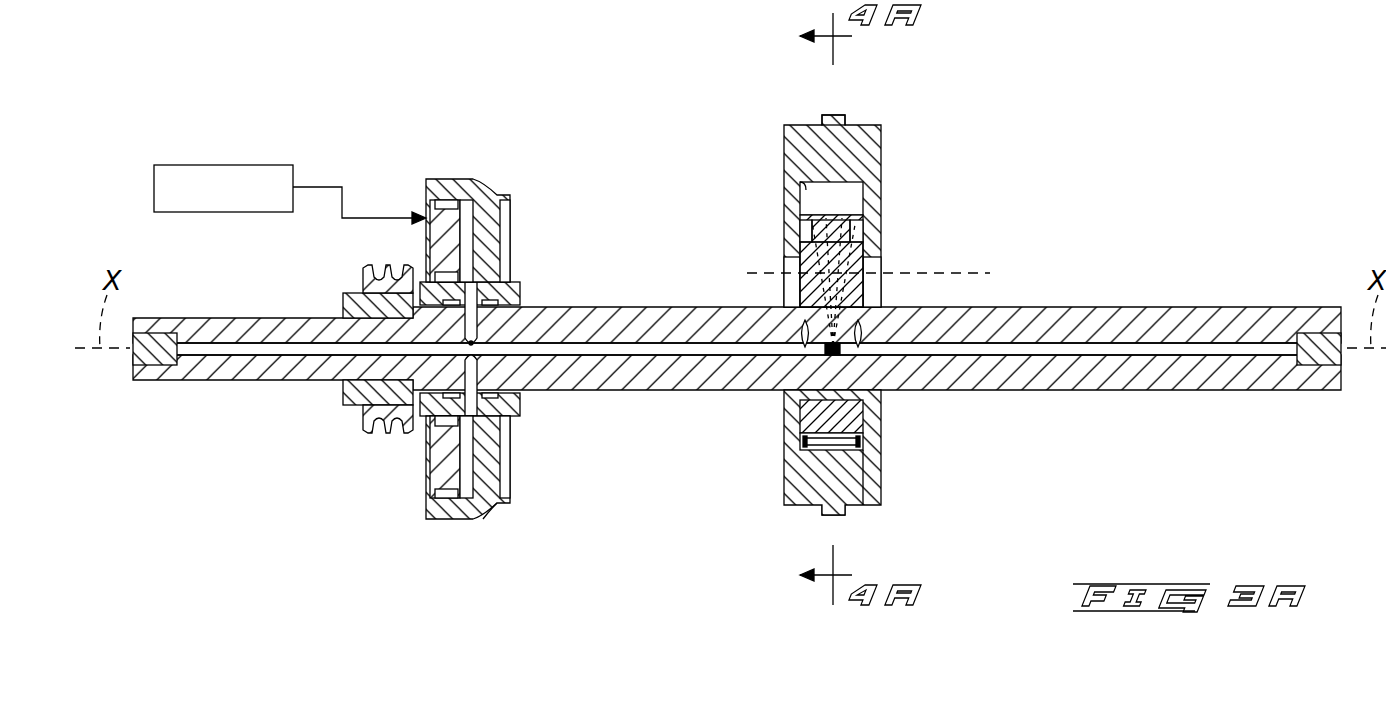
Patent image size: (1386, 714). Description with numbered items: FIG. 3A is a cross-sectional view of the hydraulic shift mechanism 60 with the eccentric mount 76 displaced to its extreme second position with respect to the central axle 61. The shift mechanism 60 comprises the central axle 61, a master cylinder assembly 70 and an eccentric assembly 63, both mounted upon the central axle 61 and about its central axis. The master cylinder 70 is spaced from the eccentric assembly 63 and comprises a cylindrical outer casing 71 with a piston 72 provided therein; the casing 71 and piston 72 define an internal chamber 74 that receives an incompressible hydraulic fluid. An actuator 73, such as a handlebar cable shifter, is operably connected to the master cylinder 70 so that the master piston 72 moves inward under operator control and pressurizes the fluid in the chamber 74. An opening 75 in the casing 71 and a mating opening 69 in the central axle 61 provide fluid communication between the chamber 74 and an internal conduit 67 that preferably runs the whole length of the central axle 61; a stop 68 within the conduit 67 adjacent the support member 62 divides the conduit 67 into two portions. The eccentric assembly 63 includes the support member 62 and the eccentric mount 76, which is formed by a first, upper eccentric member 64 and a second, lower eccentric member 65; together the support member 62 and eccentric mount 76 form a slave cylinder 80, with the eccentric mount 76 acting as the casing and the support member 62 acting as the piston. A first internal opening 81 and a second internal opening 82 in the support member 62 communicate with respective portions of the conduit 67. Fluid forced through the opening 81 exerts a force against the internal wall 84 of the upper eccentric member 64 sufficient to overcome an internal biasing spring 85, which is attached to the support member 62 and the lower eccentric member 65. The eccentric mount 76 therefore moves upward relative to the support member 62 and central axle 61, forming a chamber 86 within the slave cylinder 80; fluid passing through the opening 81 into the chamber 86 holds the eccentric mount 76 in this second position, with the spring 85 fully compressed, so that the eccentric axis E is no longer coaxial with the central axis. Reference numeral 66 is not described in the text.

The shift mechanism 60 is at (590, 155).
The central axle 61 is at (737, 324).
The support member 62 is at (858, 204).
The eccentric assembly 63 is at (730, 518).
The first eccentric member 64 is at (836, 273).
The second eccentric member 65 is at (837, 466).
The housing tab 66 is at (855, 124).
The internal conduit 67 is at (1098, 346).
The stop 68 is at (842, 357).
The mating opening 69 is at (475, 328).
The master cylinder assembly 70 is at (345, 494).
The cylindrical outer casing 71 is at (493, 507).
The piston 72 is at (464, 366).
The actuator 73 is at (222, 164).
The internal chamber 74 is at (470, 227).
The opening 75 is at (472, 293).
The eccentric mount 76 is at (890, 510).
The slave cylinder 80 is at (982, 308).
The internal opening 81 is at (800, 243).
The second internal opening 82 is at (870, 282).
The internal wall 84 is at (822, 200).
The internal biasing spring 85 is at (803, 437).
The chamber 86 is at (800, 197).
The eccentric axis E is at (1000, 270).